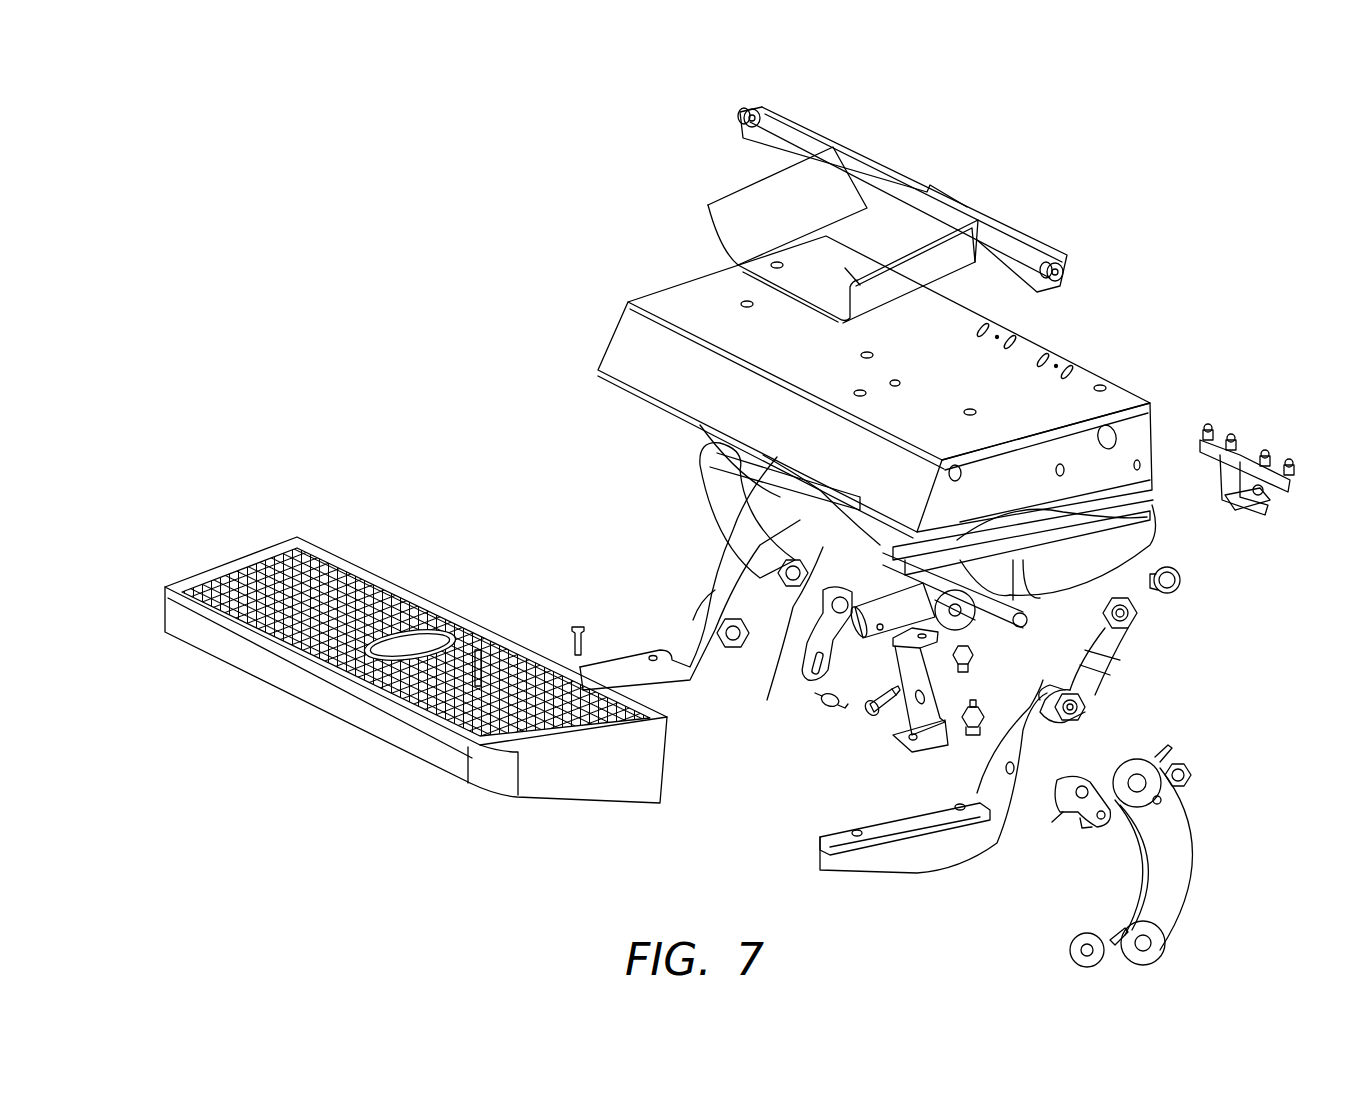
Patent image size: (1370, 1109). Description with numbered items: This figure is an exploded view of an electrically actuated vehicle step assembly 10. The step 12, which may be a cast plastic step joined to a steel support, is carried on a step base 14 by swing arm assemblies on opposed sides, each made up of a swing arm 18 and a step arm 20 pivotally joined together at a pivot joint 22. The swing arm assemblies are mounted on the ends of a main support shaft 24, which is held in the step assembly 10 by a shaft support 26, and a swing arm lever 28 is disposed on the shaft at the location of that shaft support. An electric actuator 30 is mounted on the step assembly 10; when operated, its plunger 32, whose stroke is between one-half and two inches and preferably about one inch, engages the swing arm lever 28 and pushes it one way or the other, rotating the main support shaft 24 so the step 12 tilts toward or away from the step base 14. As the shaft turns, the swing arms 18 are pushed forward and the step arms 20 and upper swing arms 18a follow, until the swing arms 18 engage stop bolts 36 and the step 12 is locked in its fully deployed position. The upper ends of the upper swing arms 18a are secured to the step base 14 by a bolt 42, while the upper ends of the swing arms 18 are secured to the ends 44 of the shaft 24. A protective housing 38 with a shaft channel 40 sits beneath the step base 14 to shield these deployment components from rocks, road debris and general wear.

The step assembly 10 is at (1172, 210).
The step 12 is at (375, 739).
The step base 14 is at (995, 376).
The swing arm 18 is at (710, 503).
The upper swing arm 18a is at (763, 455).
The step arm 20 is at (622, 665).
The pivot joint 22 is at (697, 622).
The main support shaft 24 is at (1020, 622).
The shaft support 26 is at (1090, 510).
The swing arm lever 28 is at (818, 627).
The electric actuator 30 is at (865, 645).
The plunger 32 is at (873, 600).
The stop bolt 36 is at (708, 570).
The protective housing 38 is at (712, 218).
The shaft channel 40 is at (1022, 240).
The bolt 42 is at (1140, 610).
The shaft end 44 is at (1080, 683).